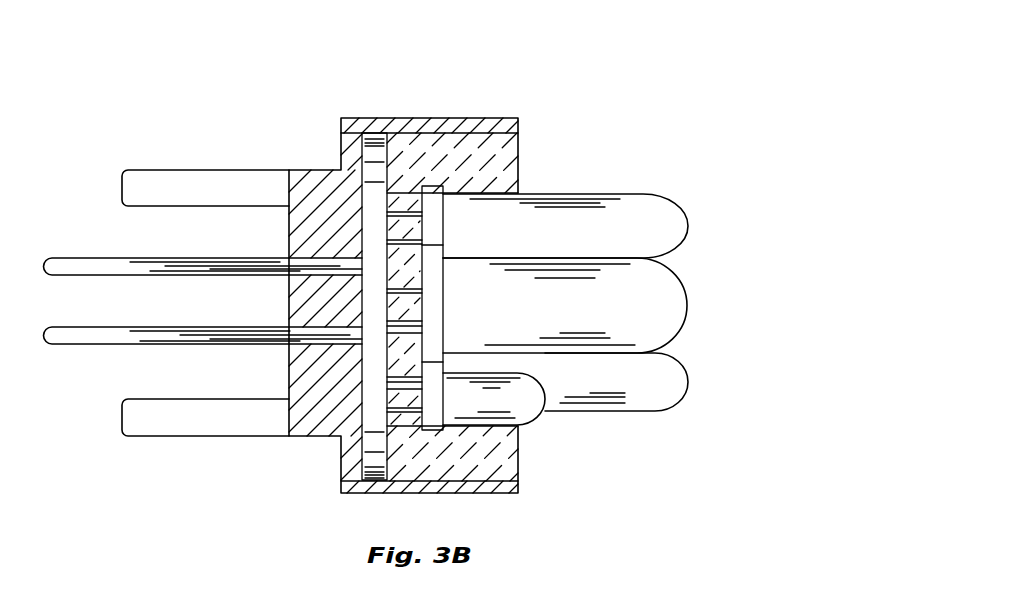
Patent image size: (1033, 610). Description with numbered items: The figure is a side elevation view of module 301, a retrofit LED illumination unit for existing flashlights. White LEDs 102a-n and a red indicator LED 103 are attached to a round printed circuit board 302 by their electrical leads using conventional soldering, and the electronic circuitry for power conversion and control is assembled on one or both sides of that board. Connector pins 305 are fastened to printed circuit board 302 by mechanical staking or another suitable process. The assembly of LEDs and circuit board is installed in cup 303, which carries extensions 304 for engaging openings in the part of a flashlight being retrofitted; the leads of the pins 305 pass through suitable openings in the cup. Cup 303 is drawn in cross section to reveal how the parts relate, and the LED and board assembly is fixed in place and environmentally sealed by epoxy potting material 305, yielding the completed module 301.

The module 301 is at (742, 187).
The printed circuit board 302 is at (375, 138).
The cup 303 is at (442, 118).
The extensions 304 is at (190, 182).
The connector pins 305 is at (513, 157).
The white LEDs 102a-n is at (580, 185).
The red indicator LED 103 is at (531, 410).